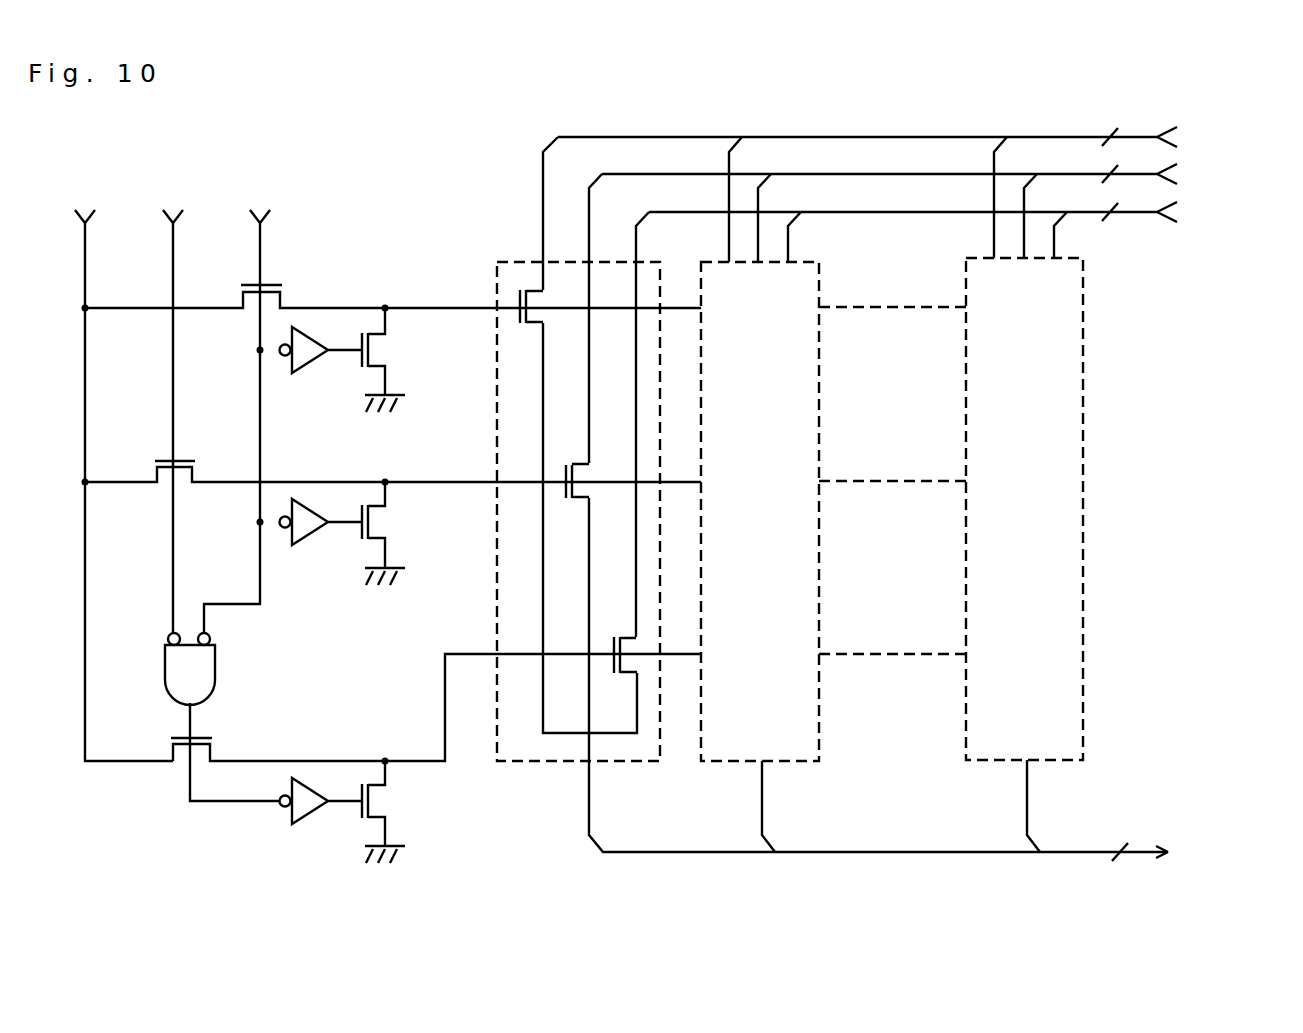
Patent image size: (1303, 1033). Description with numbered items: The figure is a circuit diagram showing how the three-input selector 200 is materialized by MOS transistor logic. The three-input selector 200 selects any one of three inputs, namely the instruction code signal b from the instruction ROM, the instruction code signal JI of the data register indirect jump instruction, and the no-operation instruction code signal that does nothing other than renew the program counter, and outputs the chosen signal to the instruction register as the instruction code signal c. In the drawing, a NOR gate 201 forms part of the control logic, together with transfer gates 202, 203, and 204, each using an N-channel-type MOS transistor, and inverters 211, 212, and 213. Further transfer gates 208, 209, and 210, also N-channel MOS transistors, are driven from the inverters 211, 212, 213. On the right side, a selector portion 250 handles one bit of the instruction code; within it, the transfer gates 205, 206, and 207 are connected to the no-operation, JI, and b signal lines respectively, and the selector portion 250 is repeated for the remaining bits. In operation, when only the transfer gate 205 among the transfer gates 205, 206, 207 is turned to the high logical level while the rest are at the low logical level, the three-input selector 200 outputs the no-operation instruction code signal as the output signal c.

The three-input selector 200 is at (1281, 482).
The NOR gate 201 is at (223, 673).
The transfer gate 202 is at (293, 288).
The transfer gate 203 is at (183, 450).
The transfer gate 204 is at (217, 737).
The transfer gate 205 is at (532, 285).
The transfer gate 206 is at (560, 470).
The transfer gate 207 is at (608, 644).
The transfer gate 208 is at (380, 349).
The transfer gate 209 is at (398, 519).
The transfer gate 210 is at (403, 805).
The inverter 211 is at (303, 377).
The inverter 212 is at (303, 548).
The inverter 213 is at (285, 817).
The selector portion 250 is at (627, 761).